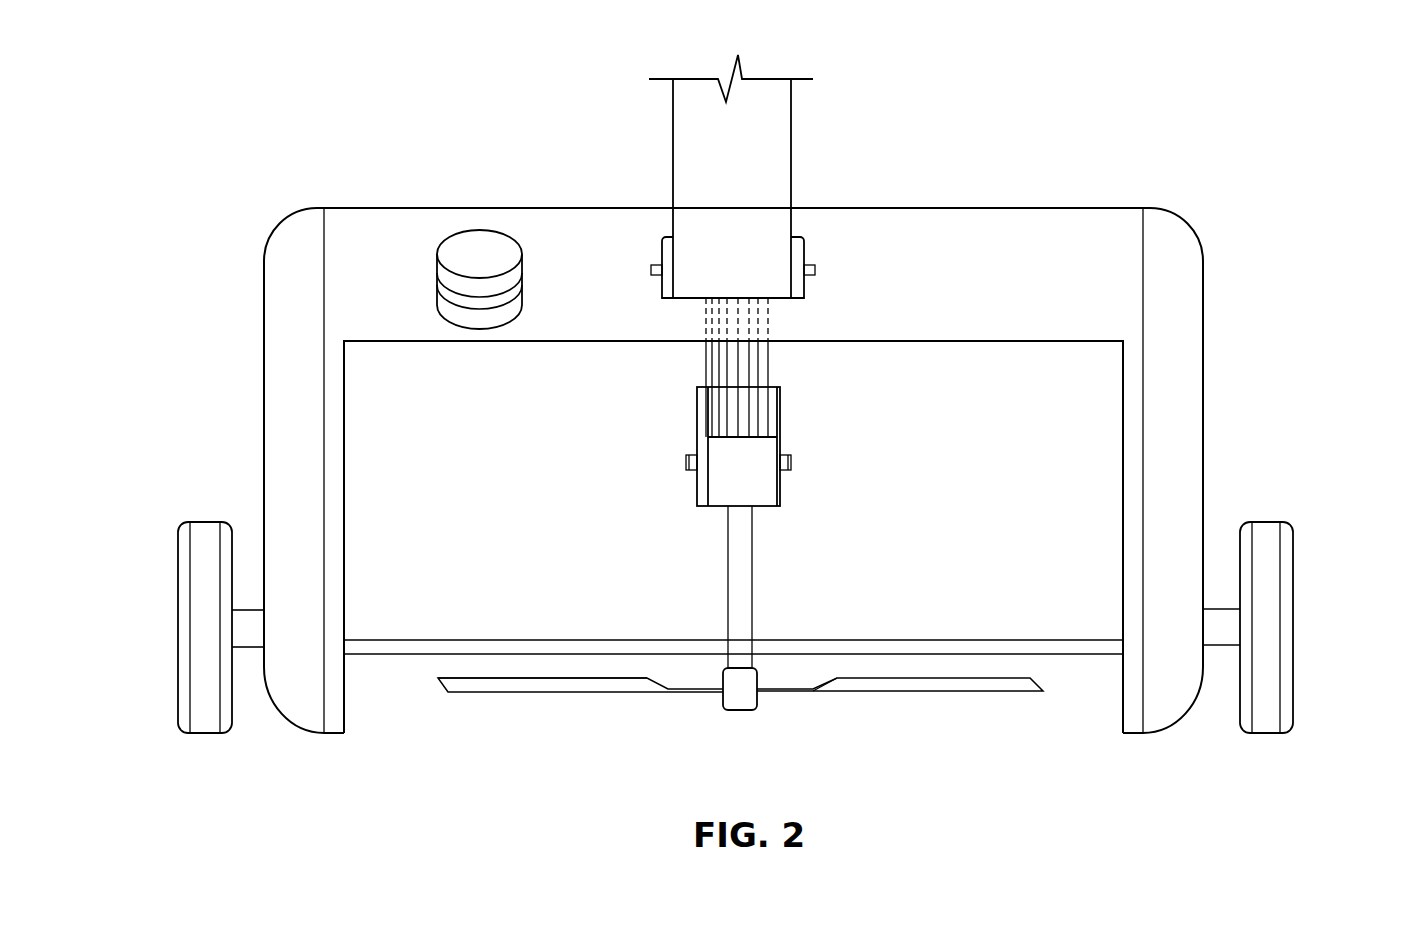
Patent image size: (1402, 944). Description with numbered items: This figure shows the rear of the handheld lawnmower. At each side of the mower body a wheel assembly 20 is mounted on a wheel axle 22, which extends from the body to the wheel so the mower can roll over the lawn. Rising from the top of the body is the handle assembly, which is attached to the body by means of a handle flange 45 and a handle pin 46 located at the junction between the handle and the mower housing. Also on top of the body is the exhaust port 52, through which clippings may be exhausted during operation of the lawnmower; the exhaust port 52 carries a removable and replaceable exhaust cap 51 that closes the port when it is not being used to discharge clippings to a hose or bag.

The wheel assembly 20 is at (185, 624).
The wheel axle 22 is at (247, 634).
The handle flange 45 is at (804, 245).
The handle pin 46 is at (651, 270).
The exhaust cap 51 is at (478, 246).
The exhaust port 52 is at (512, 302).